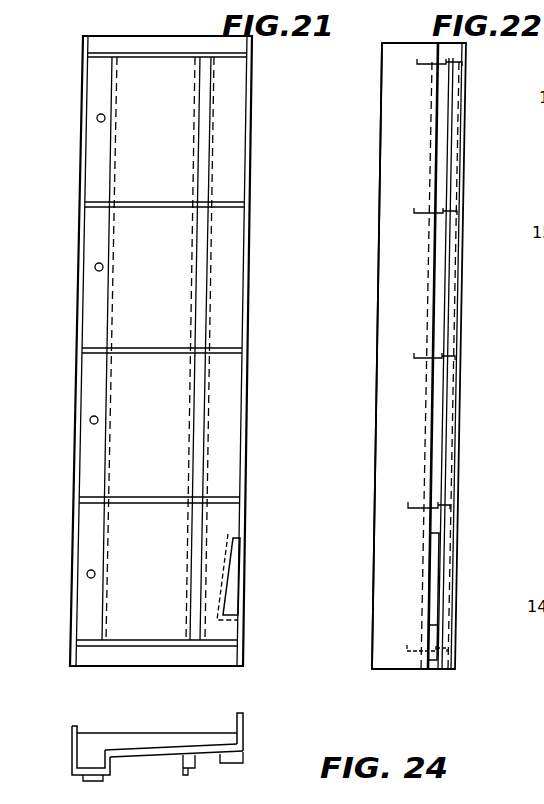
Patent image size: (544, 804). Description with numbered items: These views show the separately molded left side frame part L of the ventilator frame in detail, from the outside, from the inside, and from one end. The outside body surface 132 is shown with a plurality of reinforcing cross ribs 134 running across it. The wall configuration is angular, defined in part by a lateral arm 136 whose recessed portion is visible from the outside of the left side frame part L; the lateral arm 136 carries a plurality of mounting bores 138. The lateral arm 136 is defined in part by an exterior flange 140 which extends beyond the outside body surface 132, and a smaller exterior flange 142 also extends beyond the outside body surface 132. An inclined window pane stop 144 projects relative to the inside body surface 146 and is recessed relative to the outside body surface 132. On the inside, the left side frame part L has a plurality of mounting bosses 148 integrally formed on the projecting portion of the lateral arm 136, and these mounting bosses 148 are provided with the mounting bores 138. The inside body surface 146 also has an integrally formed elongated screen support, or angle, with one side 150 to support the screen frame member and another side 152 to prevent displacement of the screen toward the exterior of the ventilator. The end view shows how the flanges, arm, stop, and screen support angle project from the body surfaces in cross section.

In FIG. 21, the outside body surface 132 is at (147, 76).
In FIG. 24, the outside body surface 132 is at (147, 757).
In FIG. 21, the reinforcing cross ribs 134 is at (134, 206).
In FIG. 22, the reinforcing cross ribs 134 is at (418, 207).
In FIG. 24, the reinforcing cross ribs 134 is at (107, 731).
In FIG. 21, the lateral arm 136 is at (96, 233).
In FIG. 24, the lateral arm 136 is at (112, 772).
In FIG. 21, the mounting bores 138 is at (97, 121).
In FIG. 21, the exterior flange 140 is at (80, 312).
In FIG. 24, the exterior flange 140 is at (72, 740).
In FIG. 21, the smaller exterior flange 142 is at (250, 435).
In FIG. 22, the smaller exterior flange 142 is at (395, 468).
In FIG. 24, the smaller exterior flange 142 is at (243, 725).
In FIG. 21, the inclined window pane stop 144 is at (232, 578).
In FIG. 22, the inclined window pane stop 144 is at (432, 612).
In FIG. 24, the inclined window pane stop 144 is at (243, 762).
In FIG. 24, the inside body surface 146 is at (144, 758).
In FIG. 24, the mounting bosses 148 is at (83, 782).
In FIG. 22, the screen support side 150 is at (440, 277).
In FIG. 24, the screen support side 150 is at (205, 765).
In FIG. 22, the screen support side 152 is at (445, 325).
In FIG. 24, the screen support side 152 is at (185, 775).
In FIG. 21, the left side frame part L is at (252, 322).